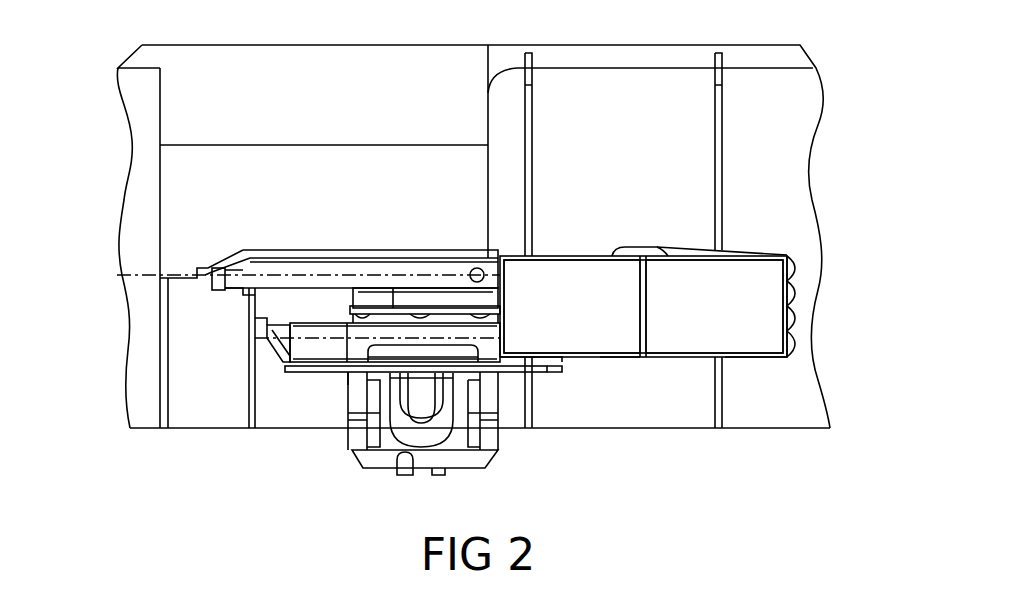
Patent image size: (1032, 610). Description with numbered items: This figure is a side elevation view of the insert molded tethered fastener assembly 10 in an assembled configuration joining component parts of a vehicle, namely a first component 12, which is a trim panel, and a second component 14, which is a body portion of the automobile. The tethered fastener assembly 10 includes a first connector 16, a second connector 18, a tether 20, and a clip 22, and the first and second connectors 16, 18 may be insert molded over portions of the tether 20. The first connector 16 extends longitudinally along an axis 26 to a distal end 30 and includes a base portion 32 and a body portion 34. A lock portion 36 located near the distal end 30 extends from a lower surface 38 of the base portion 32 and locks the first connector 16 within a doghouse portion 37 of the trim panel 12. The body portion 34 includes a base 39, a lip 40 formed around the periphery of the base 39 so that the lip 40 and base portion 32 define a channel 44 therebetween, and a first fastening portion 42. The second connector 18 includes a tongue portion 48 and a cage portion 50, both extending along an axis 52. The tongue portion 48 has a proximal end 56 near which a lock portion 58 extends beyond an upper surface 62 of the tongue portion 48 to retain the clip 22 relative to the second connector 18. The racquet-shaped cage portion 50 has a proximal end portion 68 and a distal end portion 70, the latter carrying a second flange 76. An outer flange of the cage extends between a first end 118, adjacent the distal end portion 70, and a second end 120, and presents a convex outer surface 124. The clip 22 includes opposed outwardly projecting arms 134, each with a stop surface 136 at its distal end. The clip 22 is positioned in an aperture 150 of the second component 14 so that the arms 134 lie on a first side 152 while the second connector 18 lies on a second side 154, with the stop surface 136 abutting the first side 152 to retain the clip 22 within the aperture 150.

The tethered fastener assembly 10 is at (598, 195).
The first component 12 is at (158, 173).
The second component 14 is at (545, 374).
The first connector 16 is at (220, 298).
The second connector 18 is at (272, 362).
The tether 20 is at (805, 282).
The clip 22 is at (357, 478).
The axis 26 is at (145, 275).
The distal end 30 is at (210, 283).
The base portion 32 is at (323, 262).
The body portion 34 is at (435, 262).
The lock portion 36 is at (250, 298).
The doghouse portion 37 is at (197, 248).
The lower surface 38 is at (265, 250).
The base 39 is at (505, 301).
The lip 40 is at (337, 262).
The first fastening portion 42 is at (470, 395).
The channel 44 is at (352, 262).
The tongue portion 48 is at (300, 374).
The cage portion 50 is at (672, 362).
The axis 52 is at (507, 341).
The proximal end 56 is at (266, 348).
The lock portion 58 is at (318, 262).
The upper surface 62 is at (258, 318).
The proximal end portion 68 is at (745, 362).
The distal end portion 70 is at (622, 362).
The second flange 76 is at (600, 275).
The first end 118 is at (648, 310).
The second end 120 is at (800, 312).
The outer surface 124 is at (700, 338).
The arms 134 is at (462, 470).
The stop surface 136 is at (446, 420).
The aperture 150 is at (343, 373).
The first side 152 is at (322, 408).
The second side 154 is at (561, 362).